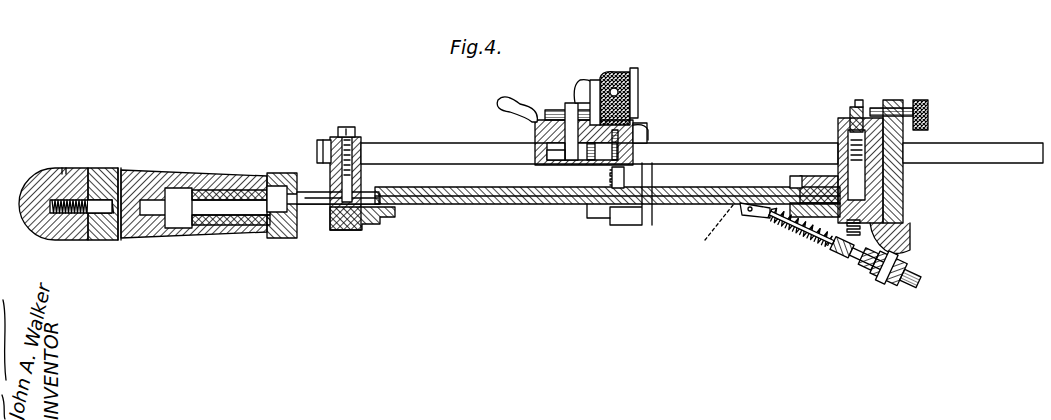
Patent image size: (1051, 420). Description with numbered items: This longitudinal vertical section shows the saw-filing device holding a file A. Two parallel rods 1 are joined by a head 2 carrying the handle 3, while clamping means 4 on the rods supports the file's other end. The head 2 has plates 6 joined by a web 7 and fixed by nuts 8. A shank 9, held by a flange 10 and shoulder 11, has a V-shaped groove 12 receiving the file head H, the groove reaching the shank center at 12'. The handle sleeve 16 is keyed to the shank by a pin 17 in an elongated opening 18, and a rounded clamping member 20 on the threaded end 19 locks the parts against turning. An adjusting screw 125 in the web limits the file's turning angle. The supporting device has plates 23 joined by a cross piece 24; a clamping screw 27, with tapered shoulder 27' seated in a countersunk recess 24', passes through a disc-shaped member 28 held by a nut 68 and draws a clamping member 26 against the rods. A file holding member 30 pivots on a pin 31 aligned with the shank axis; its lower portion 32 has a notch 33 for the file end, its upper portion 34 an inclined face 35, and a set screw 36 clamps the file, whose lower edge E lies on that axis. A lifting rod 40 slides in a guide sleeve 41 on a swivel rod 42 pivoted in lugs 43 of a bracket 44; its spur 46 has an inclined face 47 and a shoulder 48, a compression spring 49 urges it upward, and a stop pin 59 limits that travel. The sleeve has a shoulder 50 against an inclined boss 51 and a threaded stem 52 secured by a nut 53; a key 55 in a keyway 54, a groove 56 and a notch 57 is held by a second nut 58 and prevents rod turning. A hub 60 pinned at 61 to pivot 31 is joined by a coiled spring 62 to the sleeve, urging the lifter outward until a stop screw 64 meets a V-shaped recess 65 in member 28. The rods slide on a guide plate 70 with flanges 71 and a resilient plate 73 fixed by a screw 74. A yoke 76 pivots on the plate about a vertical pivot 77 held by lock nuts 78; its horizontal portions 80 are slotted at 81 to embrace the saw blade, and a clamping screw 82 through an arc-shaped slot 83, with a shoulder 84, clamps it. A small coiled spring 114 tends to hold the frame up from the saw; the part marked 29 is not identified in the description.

The parallel rods 1 is at (412, 155).
The head 2 is at (358, 136).
The handle 3 is at (226, 175).
The clamping means 4 is at (836, 147).
The parallel plates 6 is at (332, 176).
The web 7 is at (340, 135).
The nuts 8 is at (318, 145).
The shank 9 is at (318, 217).
The flange 10 is at (345, 232).
The shoulder 11 is at (368, 226).
The V-shaped groove 12 is at (402, 249).
The groove end 12' is at (426, 229).
The sleeve 16 is at (188, 178).
The pin 17 is at (122, 185).
The elongated opening 18 is at (118, 242).
The threaded end 19 is at (75, 236).
The rounded clamping member 20 is at (64, 172).
The plates 23 is at (890, 160).
The cross piece 24 is at (849, 147).
The countersunk recess 24' is at (813, 100).
The clamping member 26 is at (893, 195).
The clamping screw 27 is at (872, 101).
The tapered shoulder 27' is at (907, 81).
The disc-shaped member 28 is at (846, 117).
The ratchet 29 is at (652, 175).
The file holding member 30 is at (808, 228).
The pivot pin 31 is at (910, 230).
The lower portion 32 is at (772, 218).
The V-shaped notch 33 is at (755, 216).
The upper portion 34 is at (810, 175).
The inclined lower face 35 is at (790, 178).
The set screw 36 is at (790, 176).
The lifting rod 40 is at (838, 250).
The guide sleeve 41 is at (870, 270).
The swivel rod 42 is at (905, 185).
The lugs 43 is at (925, 132).
The bracket 44 is at (905, 155).
The tooth-engaging spur 46 is at (700, 200).
The inclined lower face 47 is at (711, 232).
The shoulder 48 is at (730, 212).
The compression spring 49 is at (785, 225).
The shoulder 50 is at (885, 280).
The inclined boss 51 is at (893, 285).
The threaded stem 52 is at (900, 285).
The nut 53 is at (905, 285).
The keyway 54 is at (920, 268).
The key 55 is at (925, 275).
The groove 56 is at (918, 282).
The notch 57 is at (920, 278).
The second nut 58 is at (910, 285).
The stop pin 59 is at (915, 282).
The hub member 60 is at (815, 238).
The pin 61 is at (856, 262).
The coiled spring 62 is at (848, 258).
The stop screw 64 is at (900, 108).
The V-shaped recess 65 is at (920, 100).
The nut 68 is at (858, 105).
The guide plate 70 is at (535, 137).
The vertical flange portions 71 is at (540, 170).
The resilient metal plate 73 is at (557, 175).
The screw 74 is at (582, 178).
The supporting yoke 76 is at (546, 112).
The vertical pivot 77 is at (570, 102).
The lock nuts 78 is at (548, 155).
The horizontal portions 80 is at (646, 226).
The slots 81 is at (600, 220).
The clamping screw 82 is at (608, 72).
The arc-shaped slot 83 is at (650, 128).
The shoulder 84 is at (637, 98).
The coiled spring 114 is at (610, 178).
The adjusting screw 125 is at (350, 126).
The file A is at (500, 206).
The lower edge of the file E is at (575, 205).
The head end of the file H is at (338, 210).